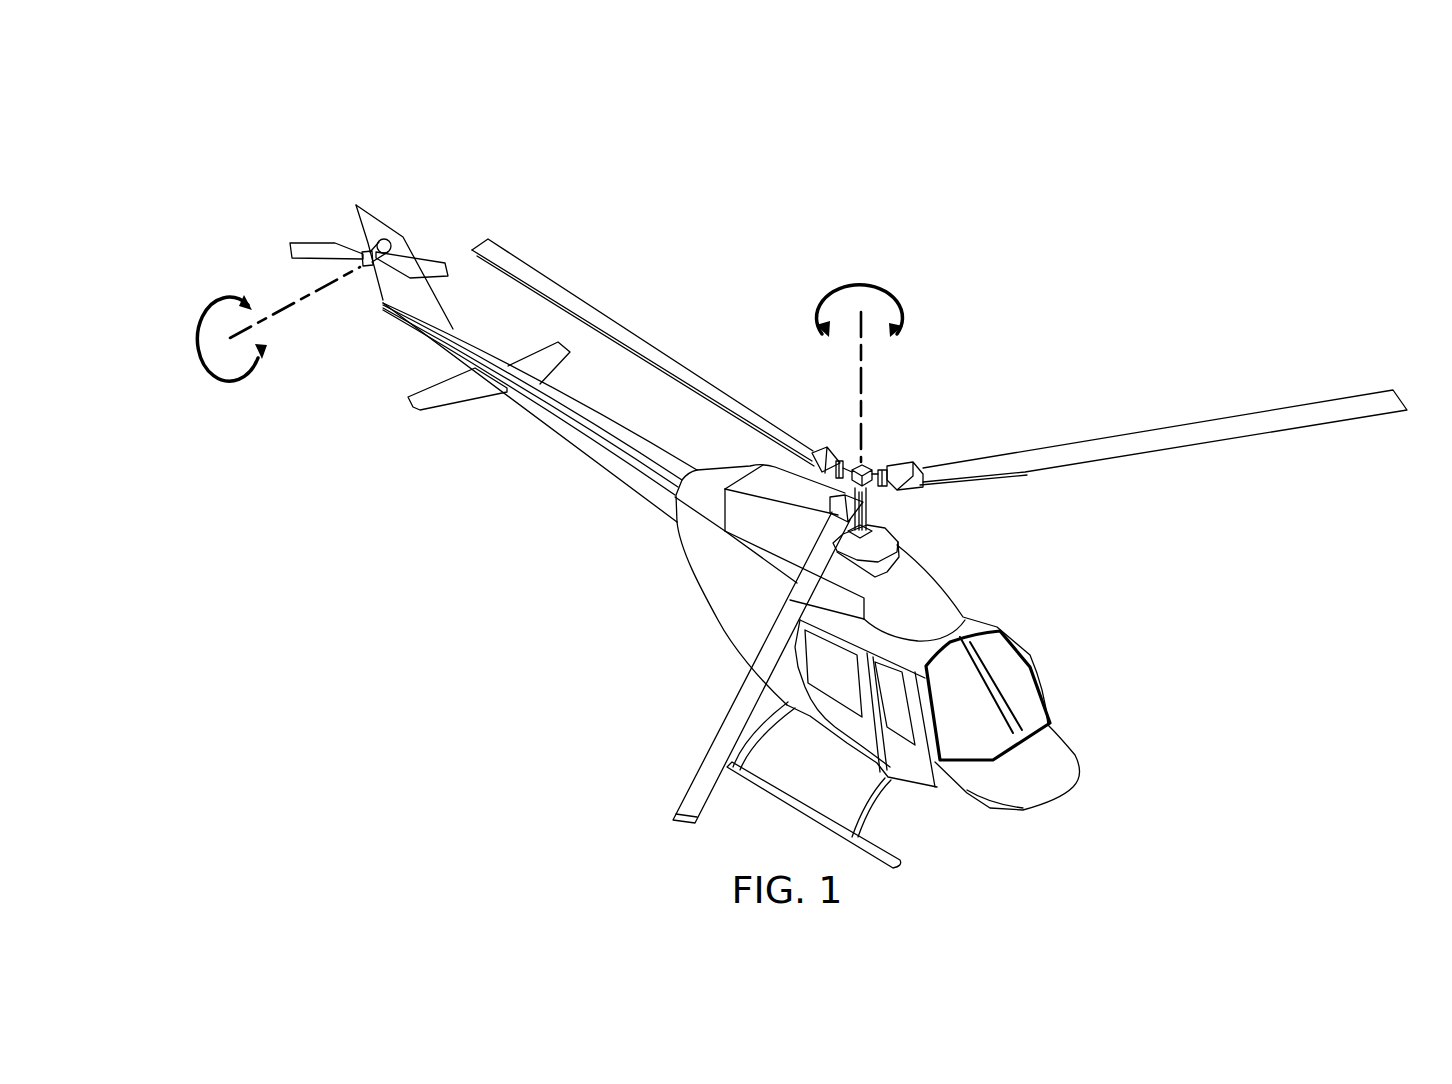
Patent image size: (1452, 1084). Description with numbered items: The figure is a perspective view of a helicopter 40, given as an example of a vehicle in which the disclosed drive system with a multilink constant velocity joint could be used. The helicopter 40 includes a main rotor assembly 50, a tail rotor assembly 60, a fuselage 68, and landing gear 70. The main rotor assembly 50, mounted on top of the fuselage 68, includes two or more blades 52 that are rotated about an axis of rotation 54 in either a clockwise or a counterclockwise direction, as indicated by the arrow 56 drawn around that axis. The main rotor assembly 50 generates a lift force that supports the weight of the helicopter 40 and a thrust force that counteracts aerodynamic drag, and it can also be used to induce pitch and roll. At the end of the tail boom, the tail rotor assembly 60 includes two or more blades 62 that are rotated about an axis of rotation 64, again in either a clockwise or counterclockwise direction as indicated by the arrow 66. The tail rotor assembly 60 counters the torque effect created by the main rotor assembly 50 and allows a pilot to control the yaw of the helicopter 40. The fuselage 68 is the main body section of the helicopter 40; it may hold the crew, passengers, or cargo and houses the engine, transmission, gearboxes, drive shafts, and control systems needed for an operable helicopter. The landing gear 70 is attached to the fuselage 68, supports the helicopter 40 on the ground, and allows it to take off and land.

The helicopter 40 is at (818, 238).
The main rotor assembly 50 is at (824, 419).
The blades 52 is at (615, 316).
The axis of rotation 54 is at (867, 384).
The arrow 56 is at (812, 312).
The tail rotor assembly 60 is at (325, 168).
The blades 62 is at (311, 242).
The axis of rotation 64 is at (296, 301).
The arrow 66 is at (201, 313).
The fuselage 68 is at (1085, 762).
The landing gear 70 is at (886, 861).